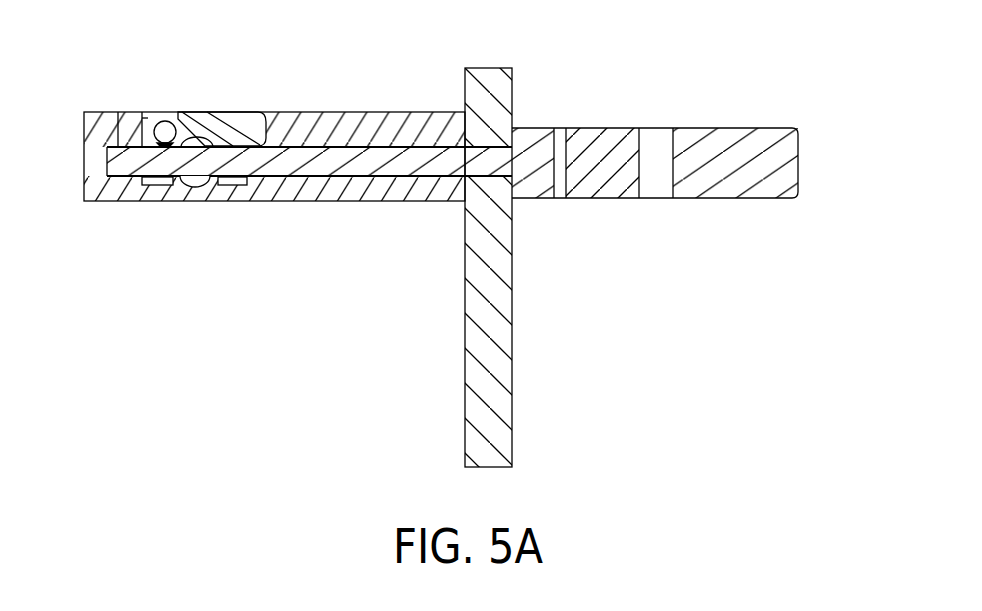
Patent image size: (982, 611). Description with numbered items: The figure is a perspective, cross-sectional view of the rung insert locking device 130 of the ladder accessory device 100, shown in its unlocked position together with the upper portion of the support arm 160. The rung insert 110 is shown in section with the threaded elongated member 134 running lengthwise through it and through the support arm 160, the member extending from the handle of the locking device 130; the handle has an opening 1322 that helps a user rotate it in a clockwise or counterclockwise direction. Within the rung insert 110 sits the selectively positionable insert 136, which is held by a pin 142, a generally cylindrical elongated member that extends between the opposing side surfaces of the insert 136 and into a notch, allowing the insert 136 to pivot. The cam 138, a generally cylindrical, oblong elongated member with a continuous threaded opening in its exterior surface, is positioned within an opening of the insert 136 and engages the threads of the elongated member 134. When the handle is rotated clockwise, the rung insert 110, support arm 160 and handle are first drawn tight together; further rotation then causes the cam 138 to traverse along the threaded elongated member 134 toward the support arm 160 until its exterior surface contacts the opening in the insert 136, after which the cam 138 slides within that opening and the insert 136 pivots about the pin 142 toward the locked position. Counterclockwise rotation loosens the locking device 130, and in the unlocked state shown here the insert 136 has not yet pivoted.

The ladder accessory device 100 is at (322, 366).
The rung insert 110 is at (371, 204).
The rung insert locking device 130 is at (603, 200).
The opening 1322 is at (673, 132).
The threaded elongated member 134 is at (395, 146).
The selectively positionable insert 136 is at (234, 112).
The cam 138 is at (190, 186).
The pin 142 is at (157, 119).
The support arm 160 is at (514, 366).